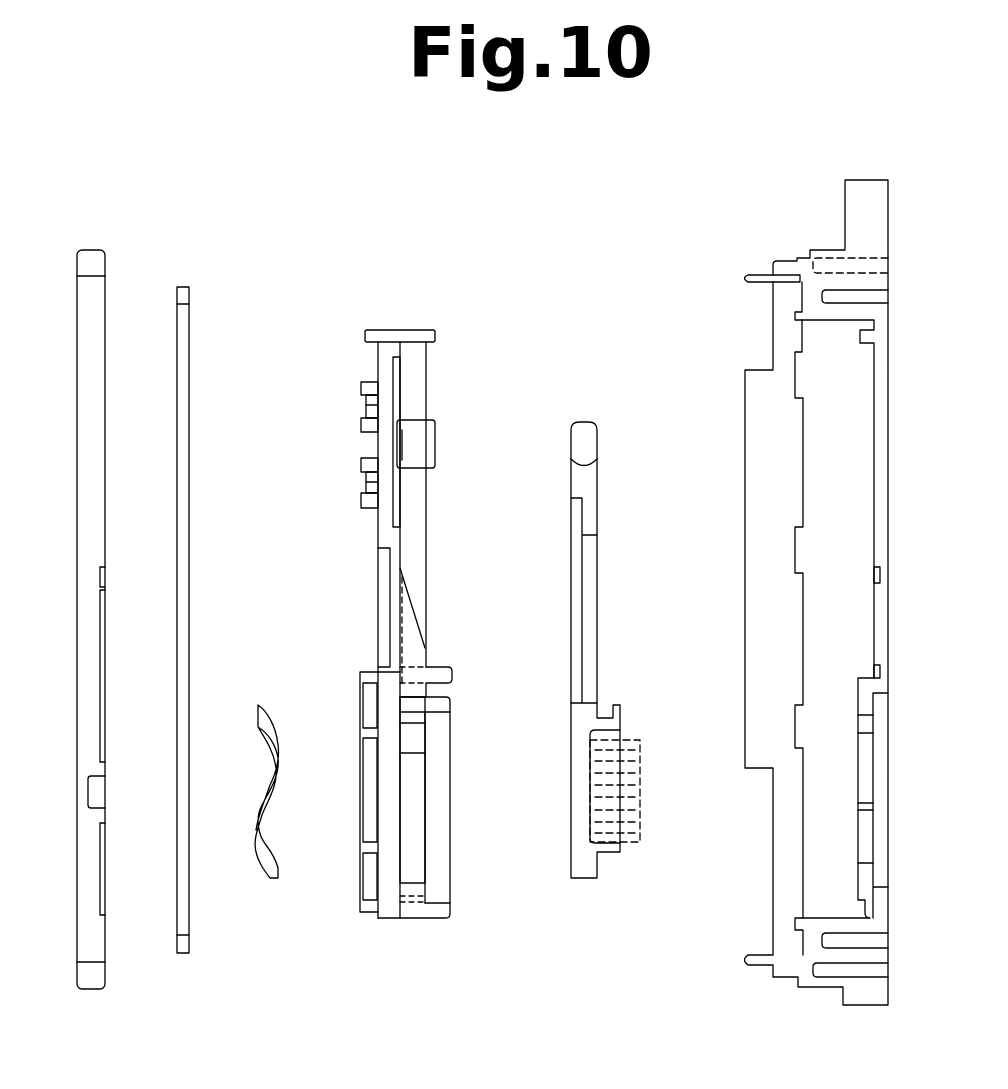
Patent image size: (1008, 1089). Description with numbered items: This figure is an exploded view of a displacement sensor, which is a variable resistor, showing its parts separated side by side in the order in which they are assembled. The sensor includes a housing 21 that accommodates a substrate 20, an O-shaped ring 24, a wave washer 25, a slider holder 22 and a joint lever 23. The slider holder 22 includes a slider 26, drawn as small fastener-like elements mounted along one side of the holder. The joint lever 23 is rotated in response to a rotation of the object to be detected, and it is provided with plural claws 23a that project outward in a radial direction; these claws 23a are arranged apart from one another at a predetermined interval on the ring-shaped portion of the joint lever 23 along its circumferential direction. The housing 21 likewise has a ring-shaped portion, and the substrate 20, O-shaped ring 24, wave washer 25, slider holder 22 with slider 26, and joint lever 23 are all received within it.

The substrate 20 is at (99, 248).
The housing 21 is at (808, 248).
The slider holder 22 is at (416, 328).
The joint lever 23 is at (650, 699).
The claws 23a is at (622, 714).
The O-shaped ring 24 is at (184, 286).
The wave washer 25 is at (271, 872).
The slider 26 is at (359, 386).